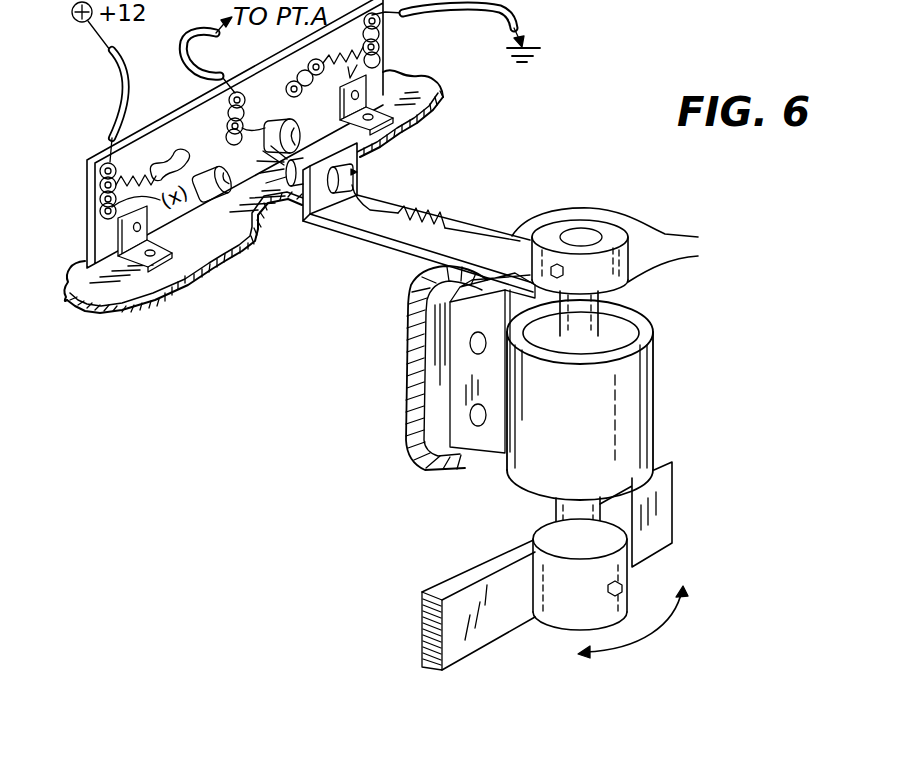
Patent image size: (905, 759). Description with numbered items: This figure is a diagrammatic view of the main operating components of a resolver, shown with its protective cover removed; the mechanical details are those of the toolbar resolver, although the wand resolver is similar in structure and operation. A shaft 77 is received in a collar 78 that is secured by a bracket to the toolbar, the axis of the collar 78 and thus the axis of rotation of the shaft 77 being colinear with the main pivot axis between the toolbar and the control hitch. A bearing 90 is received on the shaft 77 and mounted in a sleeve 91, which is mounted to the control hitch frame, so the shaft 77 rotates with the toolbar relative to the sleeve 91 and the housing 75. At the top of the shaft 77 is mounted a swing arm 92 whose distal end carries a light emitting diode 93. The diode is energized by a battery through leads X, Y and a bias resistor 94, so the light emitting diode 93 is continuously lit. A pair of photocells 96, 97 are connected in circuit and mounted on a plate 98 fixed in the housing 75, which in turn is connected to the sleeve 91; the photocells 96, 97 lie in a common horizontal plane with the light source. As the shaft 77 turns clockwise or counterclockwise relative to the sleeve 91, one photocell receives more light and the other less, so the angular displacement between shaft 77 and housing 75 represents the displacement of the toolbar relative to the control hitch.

The housing 75 is at (118, 288).
The shaft 77 is at (560, 512).
The collar 78 is at (620, 568).
The bearing 90 is at (610, 332).
The sleeve 91 is at (654, 424).
The swing arm 92 is at (390, 238).
The light emitting diode 93 is at (357, 172).
The bias resistor 94 is at (428, 218).
The photocell 96 is at (200, 190).
The photocell 97 is at (300, 106).
The plate 98 is at (87, 200).
The lead X is at (708, 239).
The lead Y is at (707, 263).